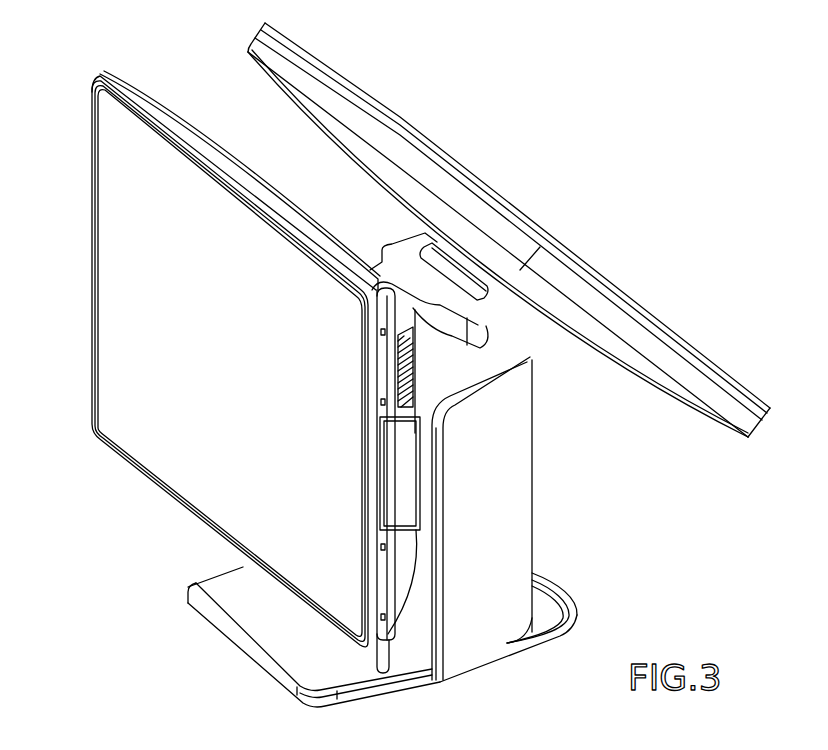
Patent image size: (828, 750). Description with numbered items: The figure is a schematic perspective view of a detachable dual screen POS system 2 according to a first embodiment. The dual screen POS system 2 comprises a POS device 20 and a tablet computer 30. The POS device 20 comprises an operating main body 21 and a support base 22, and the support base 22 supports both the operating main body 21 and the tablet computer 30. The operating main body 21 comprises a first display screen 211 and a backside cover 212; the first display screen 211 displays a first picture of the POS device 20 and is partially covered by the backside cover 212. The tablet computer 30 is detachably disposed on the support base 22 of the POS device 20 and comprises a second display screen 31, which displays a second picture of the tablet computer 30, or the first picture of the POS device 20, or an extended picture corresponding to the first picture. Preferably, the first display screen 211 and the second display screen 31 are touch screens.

The dual screen POS system 2 is at (563, 94).
The POS device 20 is at (622, 525).
The operating main body 21 is at (515, 230).
The first display screen 211 is at (553, 245).
The backside cover 212 is at (637, 370).
The support base 22 is at (522, 488).
The tablet computer 30 is at (151, 92).
The second display screen 31 is at (104, 236).